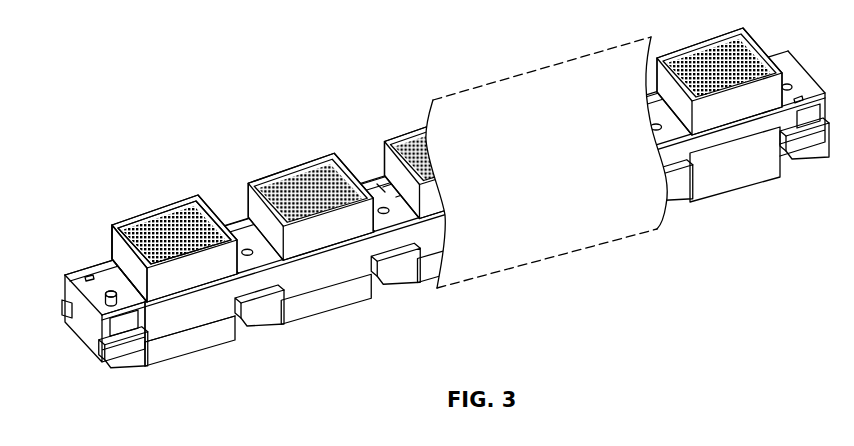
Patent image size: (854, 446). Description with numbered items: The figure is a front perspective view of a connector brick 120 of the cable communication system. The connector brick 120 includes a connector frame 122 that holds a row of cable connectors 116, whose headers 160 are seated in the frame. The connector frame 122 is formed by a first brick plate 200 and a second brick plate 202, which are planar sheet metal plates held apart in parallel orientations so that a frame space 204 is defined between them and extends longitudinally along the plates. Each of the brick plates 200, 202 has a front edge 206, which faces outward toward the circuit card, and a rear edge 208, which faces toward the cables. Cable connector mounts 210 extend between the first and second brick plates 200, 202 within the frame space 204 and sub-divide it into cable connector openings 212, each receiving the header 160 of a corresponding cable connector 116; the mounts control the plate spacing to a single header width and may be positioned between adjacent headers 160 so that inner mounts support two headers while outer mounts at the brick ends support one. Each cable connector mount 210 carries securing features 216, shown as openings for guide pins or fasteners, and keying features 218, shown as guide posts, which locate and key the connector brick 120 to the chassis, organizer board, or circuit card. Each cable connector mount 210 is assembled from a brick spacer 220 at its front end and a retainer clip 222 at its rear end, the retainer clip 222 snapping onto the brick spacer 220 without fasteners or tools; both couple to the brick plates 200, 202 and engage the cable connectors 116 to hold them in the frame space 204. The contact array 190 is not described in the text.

The cable connector 116 is at (152, 196).
The connector brick 120 is at (95, 377).
The connector frame 122 is at (153, 334).
The header 160 is at (117, 243).
The contact array 190 is at (184, 192).
The first brick plate 200 is at (170, 317).
The second brick plate 202 is at (103, 265).
The frame space 204 is at (243, 221).
The front edge 206 is at (240, 285).
The rear edge 208 is at (200, 327).
The cable connector mount 210 is at (384, 182).
The cable connector opening 212 is at (398, 187).
The securing feature 216 is at (378, 274).
The keying feature 218 is at (102, 312).
The brick spacer 220 is at (415, 210).
The retainer clip 222 is at (400, 272).